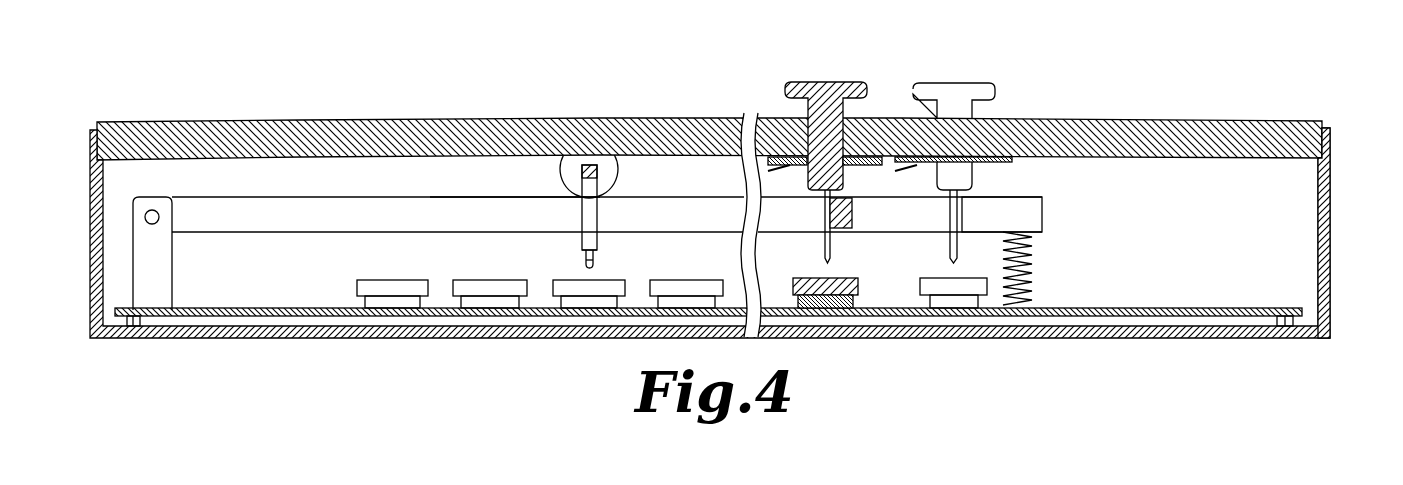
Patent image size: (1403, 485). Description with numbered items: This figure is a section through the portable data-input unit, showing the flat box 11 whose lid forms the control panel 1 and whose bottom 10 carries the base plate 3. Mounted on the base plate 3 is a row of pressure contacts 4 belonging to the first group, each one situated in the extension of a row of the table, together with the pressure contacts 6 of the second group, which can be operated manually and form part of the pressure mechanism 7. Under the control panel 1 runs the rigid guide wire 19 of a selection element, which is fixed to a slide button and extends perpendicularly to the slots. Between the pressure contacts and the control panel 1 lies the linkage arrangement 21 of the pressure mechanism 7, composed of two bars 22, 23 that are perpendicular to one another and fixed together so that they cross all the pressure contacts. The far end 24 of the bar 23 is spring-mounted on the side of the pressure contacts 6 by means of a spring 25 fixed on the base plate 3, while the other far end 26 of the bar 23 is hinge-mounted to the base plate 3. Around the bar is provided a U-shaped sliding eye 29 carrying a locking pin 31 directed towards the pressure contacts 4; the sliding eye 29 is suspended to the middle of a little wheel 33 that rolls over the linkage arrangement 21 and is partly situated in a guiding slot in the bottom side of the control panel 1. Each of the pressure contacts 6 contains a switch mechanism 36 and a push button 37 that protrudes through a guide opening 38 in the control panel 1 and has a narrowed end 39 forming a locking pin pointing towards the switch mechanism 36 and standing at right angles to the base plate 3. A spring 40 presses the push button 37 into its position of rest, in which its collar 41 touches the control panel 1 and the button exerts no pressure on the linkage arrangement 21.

The control panel 1 is at (1265, 120).
The base plate 3 is at (1295, 308).
The pressure contacts 4 is at (395, 292).
The pressure contacts 6 is at (847, 98).
The pressure mechanism 7 is at (1011, 147).
The bottom 10 is at (1247, 338).
The flat box 11 is at (1336, 143).
The rigid guide wire 19 is at (592, 220).
The linkage arrangement 21 is at (385, 192).
The bar 22 is at (855, 220).
The bar 23 is at (428, 217).
The far end 24 is at (1043, 213).
The spring 25 is at (1027, 287).
The other far end 26 is at (132, 215).
The sliding eye 29 is at (595, 218).
The locking pin 31 is at (594, 260).
The little wheel 33 is at (572, 170).
The switch mechanism 36 is at (955, 288).
The push button 37 is at (813, 82).
The guide opening 38 is at (785, 130).
The narrowed end 39 is at (823, 262).
The spring 40 is at (744, 337).
The collar 41 is at (857, 155).